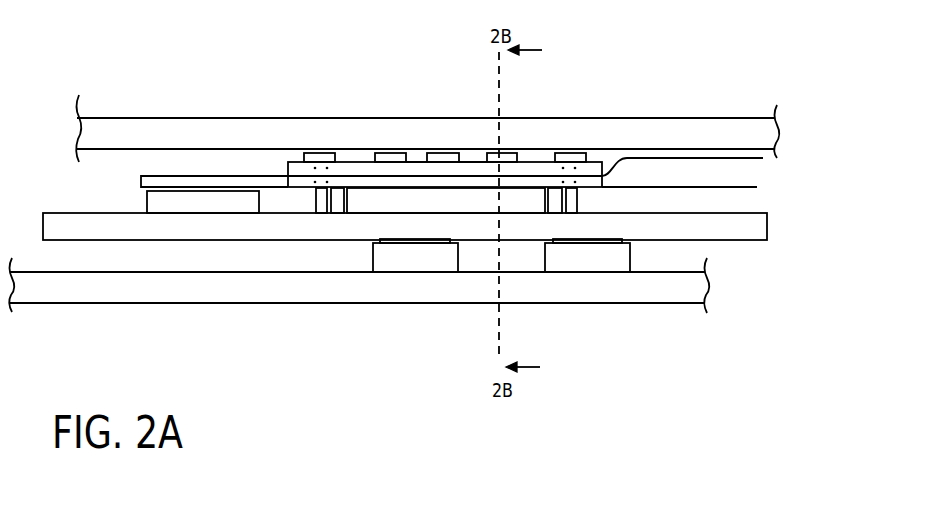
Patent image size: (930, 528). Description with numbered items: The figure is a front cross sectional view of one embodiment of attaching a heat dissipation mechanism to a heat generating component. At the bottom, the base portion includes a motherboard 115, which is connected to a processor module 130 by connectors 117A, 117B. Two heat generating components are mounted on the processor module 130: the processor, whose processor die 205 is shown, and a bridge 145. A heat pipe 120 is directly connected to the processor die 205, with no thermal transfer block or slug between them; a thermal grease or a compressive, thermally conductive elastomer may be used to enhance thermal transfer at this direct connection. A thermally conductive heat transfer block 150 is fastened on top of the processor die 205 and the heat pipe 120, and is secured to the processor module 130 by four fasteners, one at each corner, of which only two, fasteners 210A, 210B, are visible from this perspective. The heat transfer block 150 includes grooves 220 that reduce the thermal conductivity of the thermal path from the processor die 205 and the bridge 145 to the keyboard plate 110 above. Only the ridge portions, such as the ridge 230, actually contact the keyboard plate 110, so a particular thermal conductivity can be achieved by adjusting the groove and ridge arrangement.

The keyboard plate 110 is at (653, 137).
The motherboard 115 is at (405, 300).
The connector 117A is at (438, 268).
The connector 117B is at (610, 268).
The heat pipe 120 is at (141, 181).
The processor module 130 is at (738, 236).
The bridge 145 is at (147, 203).
The heat transfer block 150 is at (288, 165).
The processor die 205 is at (358, 195).
The fastener 210A is at (316, 200).
The fastener 210B is at (577, 200).
The grooves 220 is at (470, 155).
The ridge 230 is at (388, 153).